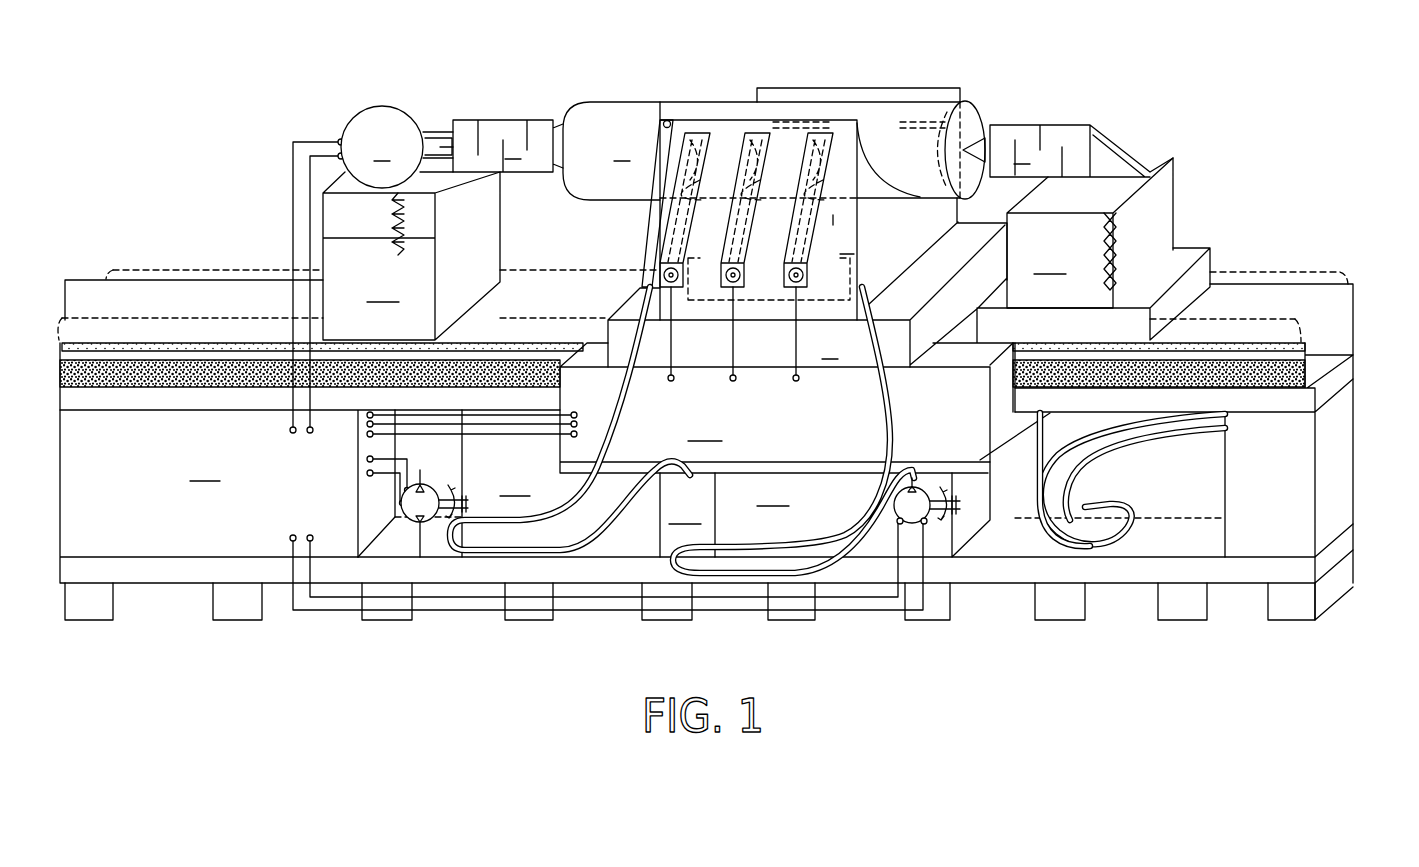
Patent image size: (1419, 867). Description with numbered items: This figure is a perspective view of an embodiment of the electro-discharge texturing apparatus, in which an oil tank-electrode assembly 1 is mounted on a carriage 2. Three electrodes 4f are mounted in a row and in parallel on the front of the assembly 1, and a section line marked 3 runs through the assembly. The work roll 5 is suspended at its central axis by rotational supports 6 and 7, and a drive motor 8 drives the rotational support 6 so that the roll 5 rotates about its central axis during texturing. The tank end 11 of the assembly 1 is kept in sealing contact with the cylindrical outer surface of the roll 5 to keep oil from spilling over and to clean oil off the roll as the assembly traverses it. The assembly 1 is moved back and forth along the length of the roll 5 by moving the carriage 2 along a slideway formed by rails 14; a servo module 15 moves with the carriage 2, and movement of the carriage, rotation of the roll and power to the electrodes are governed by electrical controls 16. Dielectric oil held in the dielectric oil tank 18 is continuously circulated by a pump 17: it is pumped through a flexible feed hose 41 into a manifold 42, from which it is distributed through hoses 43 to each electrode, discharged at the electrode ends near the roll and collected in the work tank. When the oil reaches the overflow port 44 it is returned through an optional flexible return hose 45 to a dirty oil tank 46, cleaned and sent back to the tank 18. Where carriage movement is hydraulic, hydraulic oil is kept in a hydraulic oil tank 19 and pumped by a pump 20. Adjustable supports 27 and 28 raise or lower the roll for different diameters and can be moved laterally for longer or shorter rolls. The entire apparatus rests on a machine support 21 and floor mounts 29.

The oil tank-electrode assembly 1 is at (758, 211).
The carriage 2 is at (909, 305).
The section line 3 is at (749, 397).
The front electrodes 4f is at (692, 137).
The work roll 5 is at (761, 151).
The rotational support 6 is at (508, 146).
The rotational support 7 is at (1068, 187).
The drive motor 8 is at (397, 147).
The tank end 11 is at (863, 157).
The rails 14 is at (1295, 277).
The servo module 15 is at (805, 408).
The electrical controls 16 is at (310, 483).
The pump 17 is at (900, 524).
The dielectric oil tank 18 is at (873, 509).
The hydraulic oil tank 19 is at (467, 483).
The pump 20 is at (430, 510).
The machine support 21 is at (1362, 367).
The adjustable support 27 is at (1090, 233).
The adjustable support 28 is at (411, 256).
The floor mounts 29 is at (100, 605).
The flexible feed hose 41 is at (888, 424).
The manifold 42 is at (808, 298).
The hoses 43 is at (834, 221).
The overflow port 44 is at (666, 120).
The flexible return hose 45 is at (655, 233).
The dirty oil tank 46 is at (687, 515).